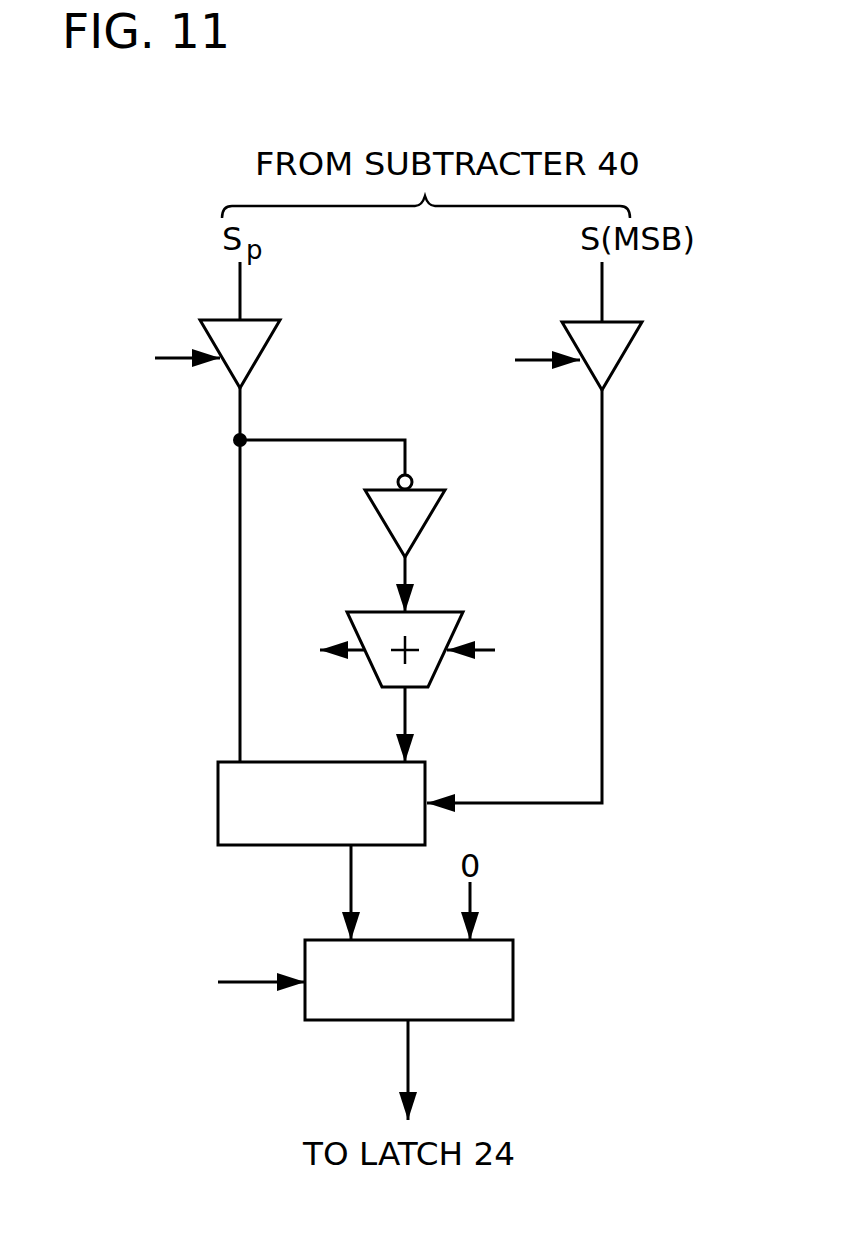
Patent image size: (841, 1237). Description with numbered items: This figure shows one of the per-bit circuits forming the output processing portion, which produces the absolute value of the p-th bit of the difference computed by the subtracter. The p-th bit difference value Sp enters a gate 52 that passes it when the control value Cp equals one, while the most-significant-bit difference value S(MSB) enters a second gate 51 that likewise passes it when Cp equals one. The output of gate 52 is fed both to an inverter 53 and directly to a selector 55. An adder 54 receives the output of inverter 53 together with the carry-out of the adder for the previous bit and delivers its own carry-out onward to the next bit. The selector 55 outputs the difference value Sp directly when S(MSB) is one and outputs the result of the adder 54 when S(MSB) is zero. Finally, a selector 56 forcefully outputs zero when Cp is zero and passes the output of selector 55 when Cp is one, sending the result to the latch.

The gate 51 is at (627, 357).
The gate 52 is at (265, 355).
The inverter 53 is at (430, 488).
The adder 54 is at (432, 612).
The selector 55 is at (425, 778).
The selector 56 is at (513, 988).